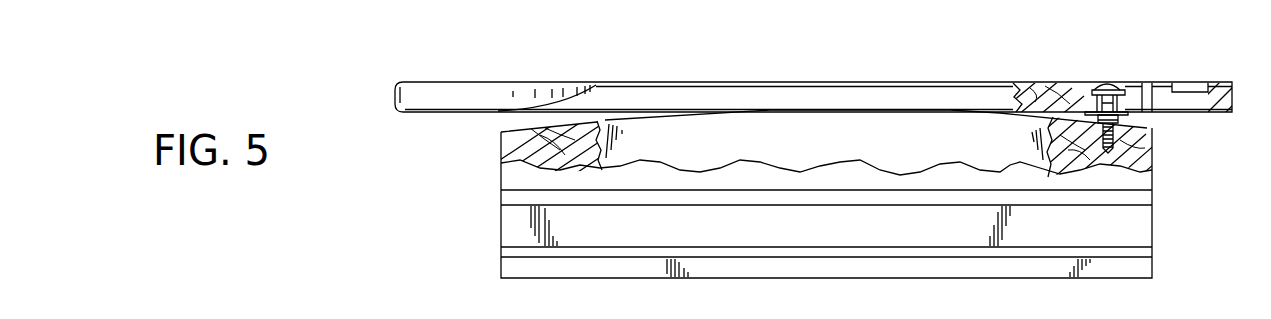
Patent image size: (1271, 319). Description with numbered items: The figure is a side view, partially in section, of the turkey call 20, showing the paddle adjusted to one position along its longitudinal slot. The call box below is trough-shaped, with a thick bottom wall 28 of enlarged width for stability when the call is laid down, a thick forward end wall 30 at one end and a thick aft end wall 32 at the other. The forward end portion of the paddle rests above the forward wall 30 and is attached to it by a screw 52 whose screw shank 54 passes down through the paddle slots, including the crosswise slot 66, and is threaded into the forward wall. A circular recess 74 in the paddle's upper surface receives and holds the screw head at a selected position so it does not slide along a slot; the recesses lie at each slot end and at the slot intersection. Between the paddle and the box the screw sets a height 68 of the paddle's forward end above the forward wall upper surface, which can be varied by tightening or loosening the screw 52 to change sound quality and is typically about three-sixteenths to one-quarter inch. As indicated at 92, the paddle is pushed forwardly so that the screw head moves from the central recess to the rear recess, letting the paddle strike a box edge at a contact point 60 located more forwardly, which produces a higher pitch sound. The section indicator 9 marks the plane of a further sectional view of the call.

The turkey call 20 is at (636, 68).
The bottom wall 28 is at (1153, 263).
The forward end wall 30 is at (1150, 165).
The aft end wall 32 is at (501, 150).
The screw 52 is at (1098, 80).
The screw shank 54 is at (1097, 105).
The contact point 60 is at (825, 60).
The crosswise slot 66 is at (1150, 88).
The height 68 is at (1153, 113).
The circular recess 74 is at (1125, 83).
The forward pushing movement 92 is at (360, 95).
The section line 9- 9 is at (853, 52).